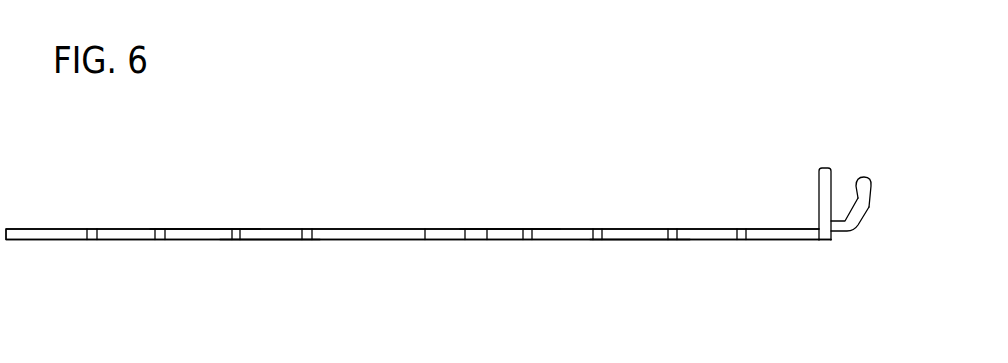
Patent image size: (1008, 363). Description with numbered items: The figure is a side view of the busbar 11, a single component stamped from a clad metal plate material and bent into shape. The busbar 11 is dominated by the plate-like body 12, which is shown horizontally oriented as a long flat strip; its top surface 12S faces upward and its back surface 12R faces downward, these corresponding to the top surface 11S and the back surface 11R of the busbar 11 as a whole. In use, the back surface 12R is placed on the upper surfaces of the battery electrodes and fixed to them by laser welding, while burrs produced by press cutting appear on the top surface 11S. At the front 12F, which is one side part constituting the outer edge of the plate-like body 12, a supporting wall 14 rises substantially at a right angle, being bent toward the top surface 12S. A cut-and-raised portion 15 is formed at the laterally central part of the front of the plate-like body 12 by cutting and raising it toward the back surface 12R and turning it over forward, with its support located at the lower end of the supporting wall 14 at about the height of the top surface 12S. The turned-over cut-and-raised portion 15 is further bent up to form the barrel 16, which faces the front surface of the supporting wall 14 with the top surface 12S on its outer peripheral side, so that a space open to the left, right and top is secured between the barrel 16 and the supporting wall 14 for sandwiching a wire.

The busbar 11 is at (718, 102).
The plate-like body 12 is at (368, 229).
The top surface 12S is at (203, 228).
The back surface 12R is at (637, 240).
The front 12F is at (827, 236).
The top surface 11S is at (510, 228).
The back surface 11R is at (268, 240).
The supporting wall 14 is at (818, 190).
The cut-and-raised portion 15 is at (859, 178).
The barrel 16 is at (866, 203).